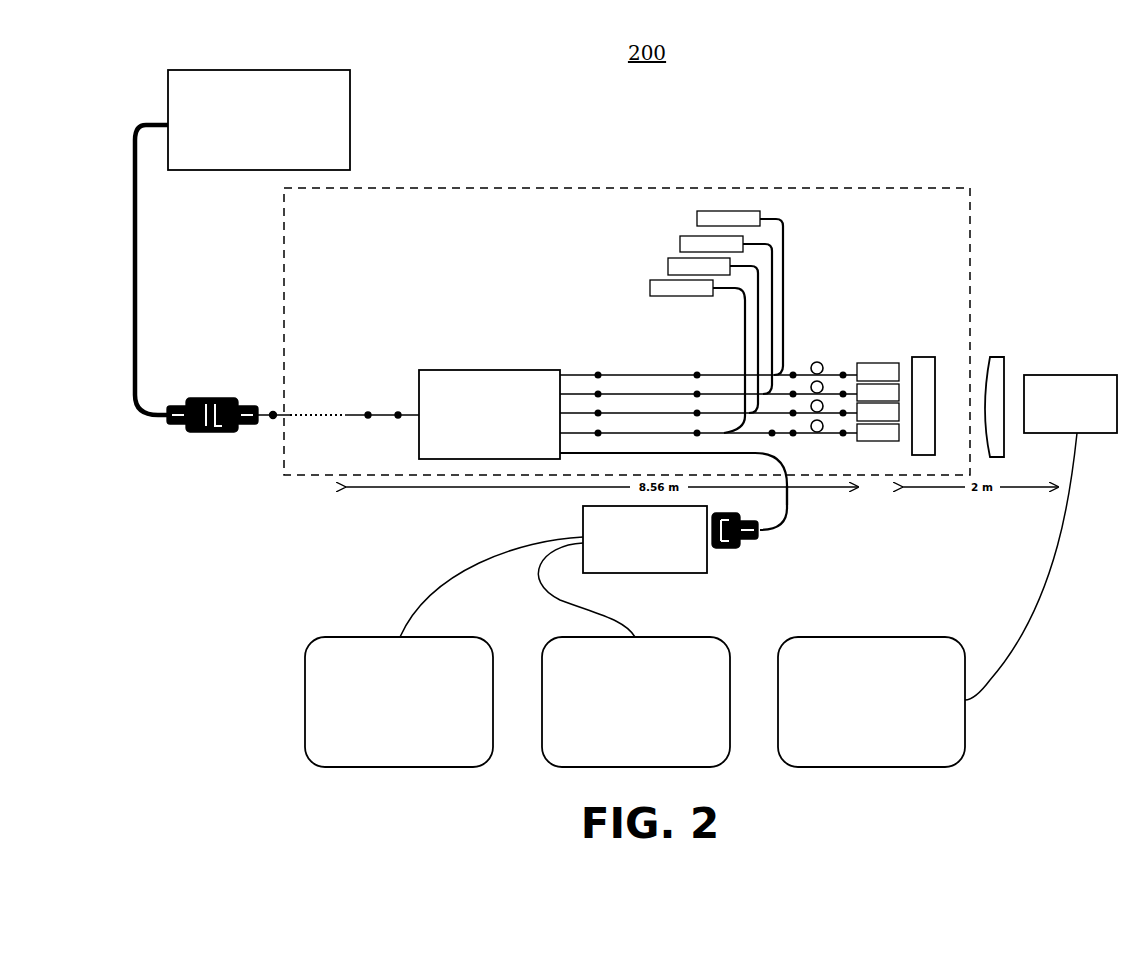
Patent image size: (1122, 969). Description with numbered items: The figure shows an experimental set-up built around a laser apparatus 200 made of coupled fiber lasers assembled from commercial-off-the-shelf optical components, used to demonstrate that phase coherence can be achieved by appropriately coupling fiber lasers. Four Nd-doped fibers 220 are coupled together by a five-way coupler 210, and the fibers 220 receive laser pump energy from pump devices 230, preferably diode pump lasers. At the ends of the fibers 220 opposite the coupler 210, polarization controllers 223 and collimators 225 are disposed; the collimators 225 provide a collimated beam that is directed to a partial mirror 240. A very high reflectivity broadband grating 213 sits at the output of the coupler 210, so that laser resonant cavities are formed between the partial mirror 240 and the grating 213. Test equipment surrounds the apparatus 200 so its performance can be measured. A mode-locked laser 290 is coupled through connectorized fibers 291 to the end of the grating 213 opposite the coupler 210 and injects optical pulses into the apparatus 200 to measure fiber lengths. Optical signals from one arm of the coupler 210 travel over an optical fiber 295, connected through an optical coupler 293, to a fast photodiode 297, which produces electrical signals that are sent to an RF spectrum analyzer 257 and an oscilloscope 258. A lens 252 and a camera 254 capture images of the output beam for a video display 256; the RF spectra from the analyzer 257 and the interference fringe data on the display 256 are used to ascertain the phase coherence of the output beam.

The laser apparatus 200 is at (972, 236).
The five-way coupler 210 is at (472, 370).
The high reflectivity broadband grating 213 is at (320, 404).
The Nd-doped fibers 220 is at (642, 366).
The polarization controllers 223 is at (816, 352).
The collimators 225 is at (872, 352).
The pump devices 230 is at (697, 218).
The partial mirror 240 is at (925, 357).
The lens 252 is at (998, 357).
The camera 254 is at (1068, 375).
The video display 256 is at (863, 637).
The RF spectrum analyzer 257 is at (337, 636).
The oscilloscope 258 is at (556, 637).
The mode-locked laser 290 is at (350, 122).
The connectorized fibers 291 is at (222, 442).
The optical coupler 293 is at (738, 550).
The optical fiber 295 is at (788, 498).
The fast photodiode 297 is at (583, 525).